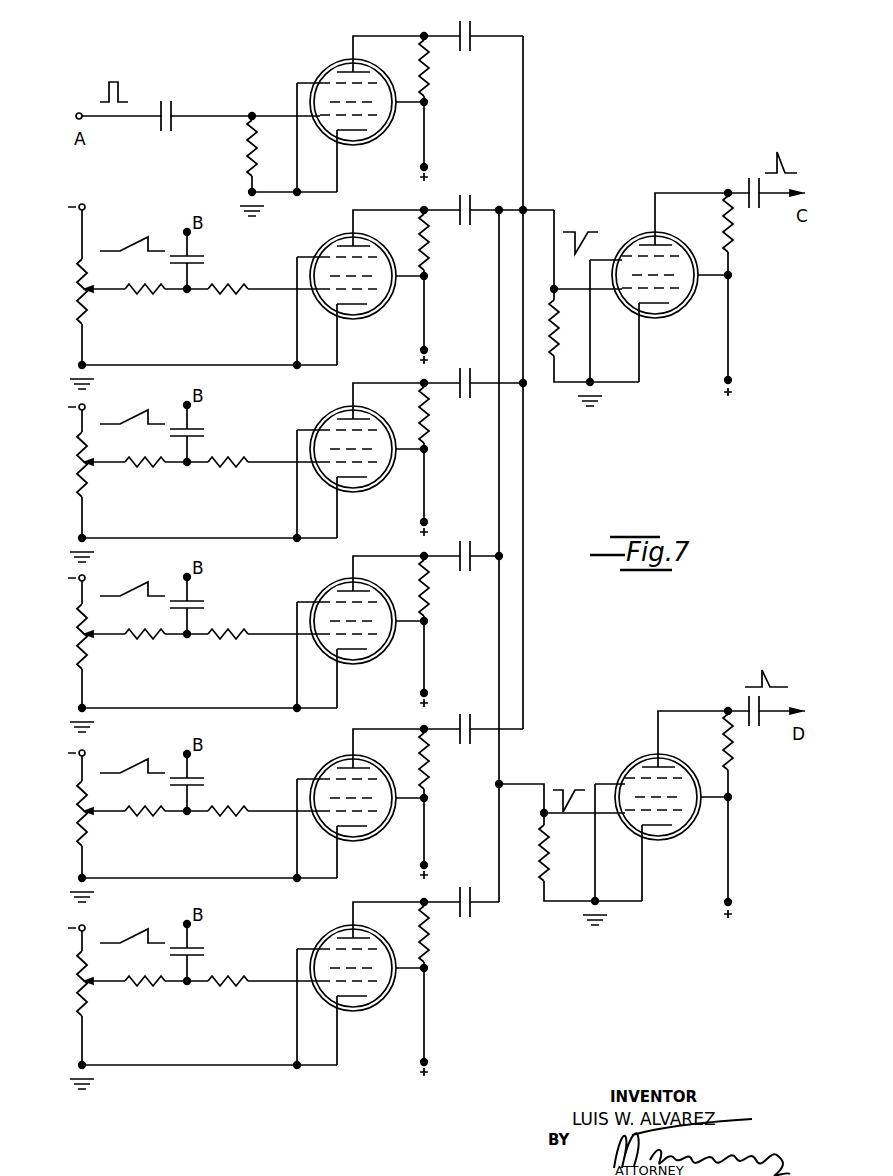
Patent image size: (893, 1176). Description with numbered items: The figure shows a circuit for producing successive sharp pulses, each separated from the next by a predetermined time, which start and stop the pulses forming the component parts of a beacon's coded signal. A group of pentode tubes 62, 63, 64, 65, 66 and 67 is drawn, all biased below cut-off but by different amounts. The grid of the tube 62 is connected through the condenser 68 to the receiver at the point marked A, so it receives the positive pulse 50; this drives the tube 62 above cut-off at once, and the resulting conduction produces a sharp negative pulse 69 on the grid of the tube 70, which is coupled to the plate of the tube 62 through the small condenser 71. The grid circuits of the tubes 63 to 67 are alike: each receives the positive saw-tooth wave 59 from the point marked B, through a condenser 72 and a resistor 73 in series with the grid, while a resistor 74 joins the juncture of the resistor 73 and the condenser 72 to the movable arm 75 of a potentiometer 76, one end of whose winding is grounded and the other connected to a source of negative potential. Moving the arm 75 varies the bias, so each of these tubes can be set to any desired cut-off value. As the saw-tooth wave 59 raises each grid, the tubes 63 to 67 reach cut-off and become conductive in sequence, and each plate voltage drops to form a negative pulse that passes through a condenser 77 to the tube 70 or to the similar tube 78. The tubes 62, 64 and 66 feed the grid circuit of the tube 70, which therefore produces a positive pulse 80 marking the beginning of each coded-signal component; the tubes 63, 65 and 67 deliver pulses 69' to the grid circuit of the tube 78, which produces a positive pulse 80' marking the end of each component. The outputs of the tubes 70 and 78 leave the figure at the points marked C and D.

The positive pulse 50 is at (118, 92).
The condenser 68 is at (172, 103).
The pentode tube 62 is at (324, 67).
The pentode tube 63 is at (324, 241).
The pentode tube 64 is at (324, 412).
The pentode tube 65 is at (324, 584).
The pentode tube 66 is at (324, 761).
The pentode tube 67 is at (324, 931).
The small condenser 71 is at (474, 52).
The condenser 77 is at (468, 205).
The positive saw-tooth wave 59 is at (131, 245).
The condenser 72 is at (205, 256).
The resistor 73 is at (228, 298).
The resistor 74 is at (146, 298).
The movable arm 75 is at (98, 292).
The potentiometer 76 is at (77, 290).
The negative pulse 69 is at (585, 222).
The negative pulse 69' is at (575, 782).
The tube 70 is at (634, 238).
The tube 78 is at (636, 760).
The positive pulse 80 is at (763, 152).
The positive pulse 80' is at (766, 665).